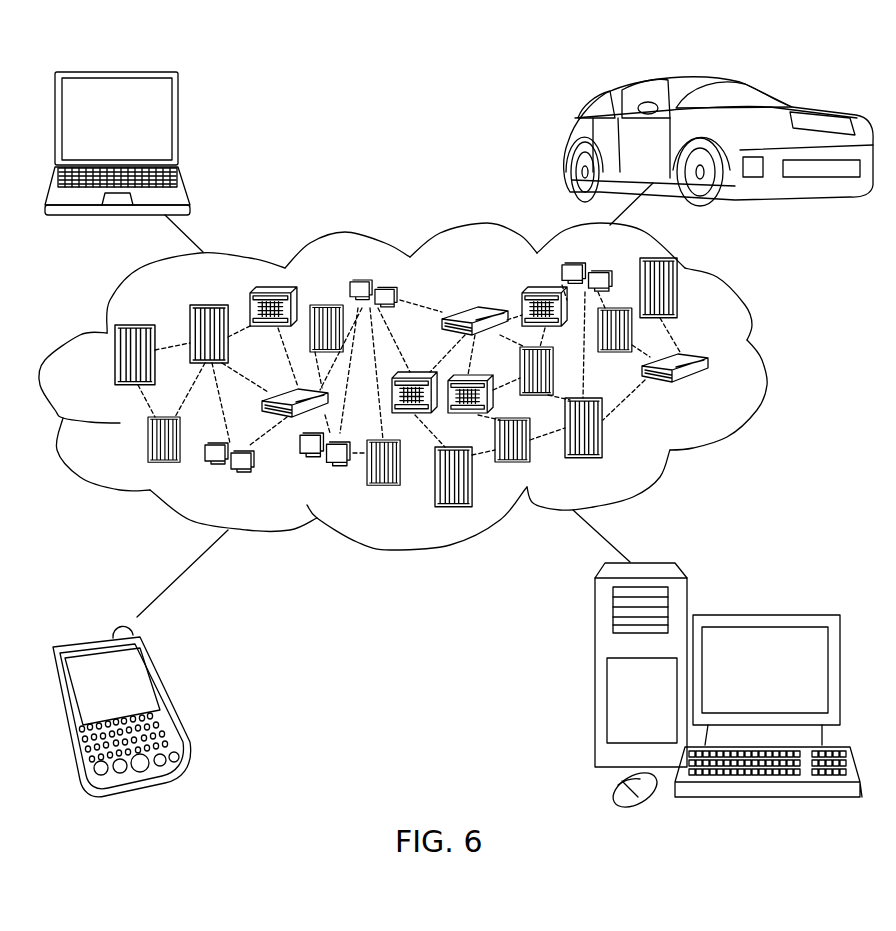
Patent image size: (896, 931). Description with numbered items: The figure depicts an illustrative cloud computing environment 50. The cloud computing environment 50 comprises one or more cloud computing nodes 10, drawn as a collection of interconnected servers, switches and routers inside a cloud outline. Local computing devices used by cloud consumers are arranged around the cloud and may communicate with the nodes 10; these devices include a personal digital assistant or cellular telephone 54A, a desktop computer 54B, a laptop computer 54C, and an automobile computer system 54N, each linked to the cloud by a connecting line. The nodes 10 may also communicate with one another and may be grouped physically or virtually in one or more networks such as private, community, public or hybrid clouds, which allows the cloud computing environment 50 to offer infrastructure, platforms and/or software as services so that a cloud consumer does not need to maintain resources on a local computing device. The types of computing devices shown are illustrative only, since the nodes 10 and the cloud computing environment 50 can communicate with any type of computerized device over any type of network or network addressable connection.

The cloud computing node 10 is at (712, 390).
The cloud computing environment 50 is at (763, 363).
The personal digital assistant (PDA) or cellular telephone 54A is at (167, 697).
The desktop computer 54B is at (763, 613).
The laptop computer 54C is at (178, 125).
The automobile computer system 54N is at (566, 138).